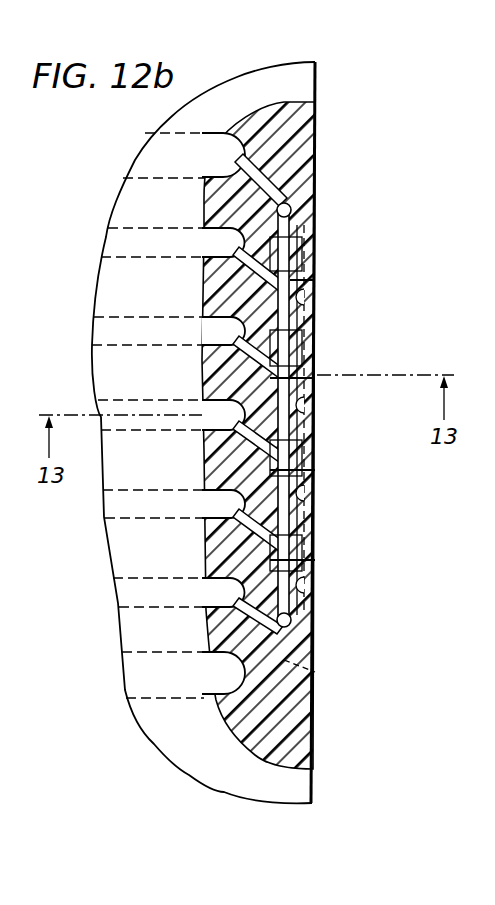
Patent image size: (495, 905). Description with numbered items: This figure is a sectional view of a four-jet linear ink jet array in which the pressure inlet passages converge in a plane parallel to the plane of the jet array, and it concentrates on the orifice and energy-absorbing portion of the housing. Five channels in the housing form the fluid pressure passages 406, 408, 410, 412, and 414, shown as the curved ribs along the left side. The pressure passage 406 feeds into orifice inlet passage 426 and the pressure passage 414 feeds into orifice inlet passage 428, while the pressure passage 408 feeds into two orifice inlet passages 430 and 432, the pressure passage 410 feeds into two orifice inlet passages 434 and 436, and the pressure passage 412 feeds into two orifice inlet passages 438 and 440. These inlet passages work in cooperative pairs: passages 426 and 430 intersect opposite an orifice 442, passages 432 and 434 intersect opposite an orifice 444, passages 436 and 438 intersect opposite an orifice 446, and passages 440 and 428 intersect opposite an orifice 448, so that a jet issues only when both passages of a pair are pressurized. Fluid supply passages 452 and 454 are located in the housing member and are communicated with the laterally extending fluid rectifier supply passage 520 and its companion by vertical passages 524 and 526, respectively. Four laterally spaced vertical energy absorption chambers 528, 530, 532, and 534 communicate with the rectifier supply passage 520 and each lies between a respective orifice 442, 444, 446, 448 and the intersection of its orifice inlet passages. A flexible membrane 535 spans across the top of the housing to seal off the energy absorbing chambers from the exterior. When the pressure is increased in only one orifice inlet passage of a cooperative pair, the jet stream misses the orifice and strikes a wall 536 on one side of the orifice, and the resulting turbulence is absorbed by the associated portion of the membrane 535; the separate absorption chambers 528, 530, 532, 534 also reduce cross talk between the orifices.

The fluid pressure passage 406 is at (312, 130).
The fluid pressure passage 408 is at (115, 505).
The fluid pressure passage 410 is at (118, 406).
The fluid pressure passage 412 is at (118, 329).
The fluid pressure passage 414 is at (118, 248).
The orifice inlet passage 426 is at (228, 545).
The orifice inlet passage 428 is at (215, 262).
The orifice inlet passage 430 is at (225, 525).
The orifice inlet passage 432 is at (228, 455).
The orifice inlet passage 434 is at (225, 440).
The orifice inlet passage 436 is at (225, 372).
The orifice inlet passage 438 is at (220, 355).
The orifice inlet passage 440 is at (222, 290).
The orifice 442 is at (312, 554).
The orifice 444 is at (312, 470).
The orifice 446 is at (312, 370).
The orifice 448 is at (312, 282).
The fluid supply passage 452 is at (128, 677).
The fluid supply passage 454 is at (148, 160).
The fluid rectifier supply passage 520 is at (312, 603).
The vertical passage 524 is at (300, 630).
The vertical passage 526 is at (300, 212).
The energy absorption chamber 528 is at (306, 540).
The energy absorption chamber 530 is at (306, 448).
The energy absorption chamber 532 is at (312, 332).
The energy absorption chamber 534 is at (306, 248).
The flexible membrane 535 is at (312, 673).
The wall 536 is at (312, 300).